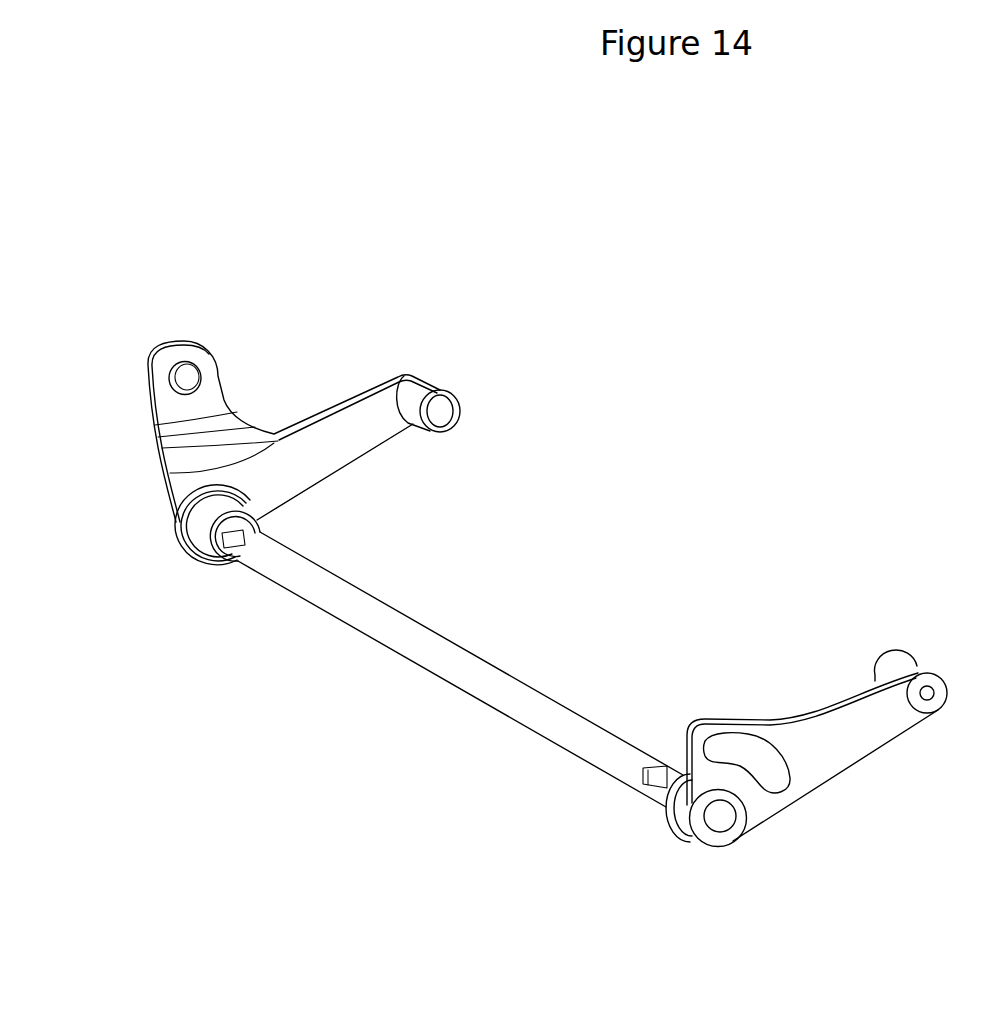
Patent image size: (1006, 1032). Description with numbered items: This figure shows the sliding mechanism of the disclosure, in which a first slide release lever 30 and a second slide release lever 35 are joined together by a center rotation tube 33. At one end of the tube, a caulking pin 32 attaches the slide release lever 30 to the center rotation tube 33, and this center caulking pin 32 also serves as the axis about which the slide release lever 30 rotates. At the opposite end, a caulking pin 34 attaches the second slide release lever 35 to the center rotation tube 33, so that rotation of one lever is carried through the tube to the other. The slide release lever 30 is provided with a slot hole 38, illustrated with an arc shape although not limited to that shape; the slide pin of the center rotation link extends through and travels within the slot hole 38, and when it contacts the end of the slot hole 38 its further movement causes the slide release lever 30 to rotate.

The slide release lever 30 is at (860, 765).
The caulking pin 32 is at (742, 829).
The center rotation tube 33 is at (533, 687).
The caulking pin 34 is at (245, 497).
The second slide release lever 35 is at (363, 392).
The slot hole 38 is at (756, 737).